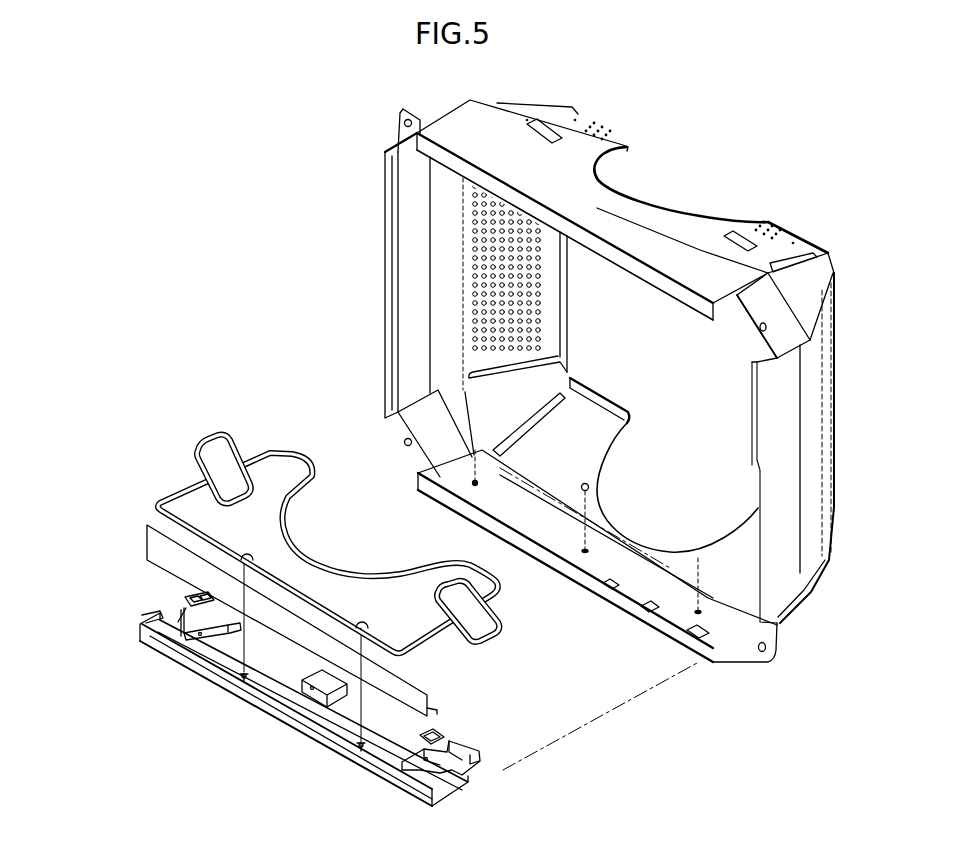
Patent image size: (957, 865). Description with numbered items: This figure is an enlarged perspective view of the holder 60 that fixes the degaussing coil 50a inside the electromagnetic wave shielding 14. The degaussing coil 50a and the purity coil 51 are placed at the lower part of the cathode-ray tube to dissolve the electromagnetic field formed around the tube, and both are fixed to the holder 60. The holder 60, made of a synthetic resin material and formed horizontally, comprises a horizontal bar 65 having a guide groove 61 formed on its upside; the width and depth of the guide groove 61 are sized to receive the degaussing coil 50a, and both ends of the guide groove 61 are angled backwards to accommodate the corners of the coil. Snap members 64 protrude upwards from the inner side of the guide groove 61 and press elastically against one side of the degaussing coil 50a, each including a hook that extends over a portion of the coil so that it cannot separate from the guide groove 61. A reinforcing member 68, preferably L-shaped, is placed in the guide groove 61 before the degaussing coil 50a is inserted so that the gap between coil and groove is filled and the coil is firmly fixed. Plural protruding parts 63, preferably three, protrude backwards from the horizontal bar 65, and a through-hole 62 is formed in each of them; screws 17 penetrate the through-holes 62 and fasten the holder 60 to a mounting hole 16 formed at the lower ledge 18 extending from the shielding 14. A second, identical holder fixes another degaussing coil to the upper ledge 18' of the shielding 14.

The shielding 14 is at (602, 203).
The mounting hole 16 is at (473, 486).
The screw 17 is at (583, 490).
The lower ledge 18 is at (597, 583).
The upper ledge 18' is at (750, 327).
The degaussing coil 50a is at (274, 452).
The purity coil 51 is at (498, 630).
The holder 60 is at (272, 675).
The guide groove 61 is at (370, 757).
The through-hole 62 is at (192, 636).
The protruding part 63 is at (228, 630).
The snap member 64 is at (242, 682).
The horizontal bar 65 is at (298, 723).
The reinforcing member 68 is at (152, 542).